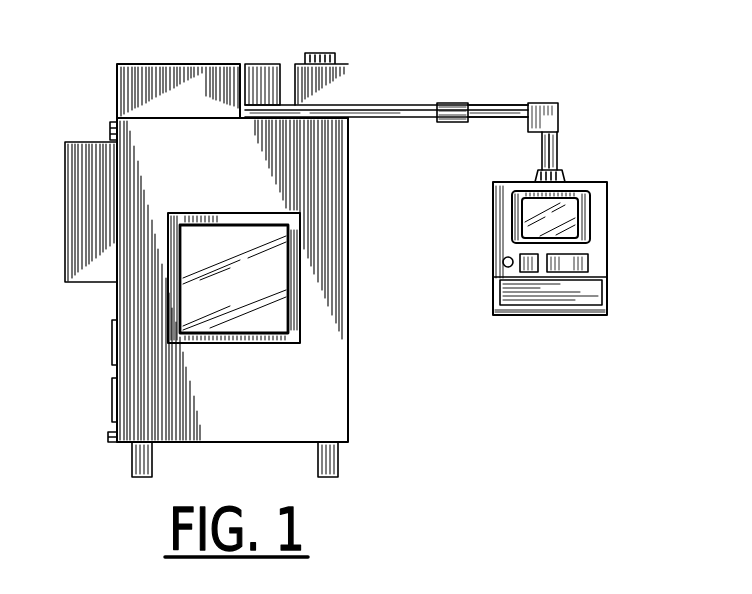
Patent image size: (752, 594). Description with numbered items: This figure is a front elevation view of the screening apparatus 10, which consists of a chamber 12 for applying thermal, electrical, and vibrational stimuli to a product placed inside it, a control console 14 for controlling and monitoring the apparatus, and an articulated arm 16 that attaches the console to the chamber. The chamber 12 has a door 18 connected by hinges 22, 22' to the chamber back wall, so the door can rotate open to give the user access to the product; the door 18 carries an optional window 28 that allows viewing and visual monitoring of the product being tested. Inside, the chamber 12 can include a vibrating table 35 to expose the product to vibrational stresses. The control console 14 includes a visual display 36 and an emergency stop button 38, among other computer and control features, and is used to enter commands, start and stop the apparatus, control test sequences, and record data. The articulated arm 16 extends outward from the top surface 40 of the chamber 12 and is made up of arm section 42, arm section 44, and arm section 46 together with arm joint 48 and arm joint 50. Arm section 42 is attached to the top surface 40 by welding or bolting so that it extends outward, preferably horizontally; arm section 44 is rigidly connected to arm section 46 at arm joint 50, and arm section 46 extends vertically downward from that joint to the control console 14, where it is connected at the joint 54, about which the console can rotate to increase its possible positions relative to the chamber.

The screening apparatus 10 is at (565, 53).
The chamber 12 is at (348, 233).
The control console 14 is at (607, 258).
The articulated arm 16 is at (375, 105).
The door 18 is at (349, 278).
The hinge 22 is at (76, 257).
The hinge 22' is at (77, 423).
The window 28 is at (265, 333).
The vibrating table 35 is at (607, 310).
The visual display 36 is at (563, 201).
The emergency stop button 38 is at (503, 262).
The top surface 40 is at (196, 118).
The arm section 42 is at (386, 118).
The arm section 44 is at (510, 103).
The arm section 46 is at (557, 152).
The arm joint 48 is at (447, 103).
The arm joint 50 is at (558, 118).
The joint 54 is at (538, 171).